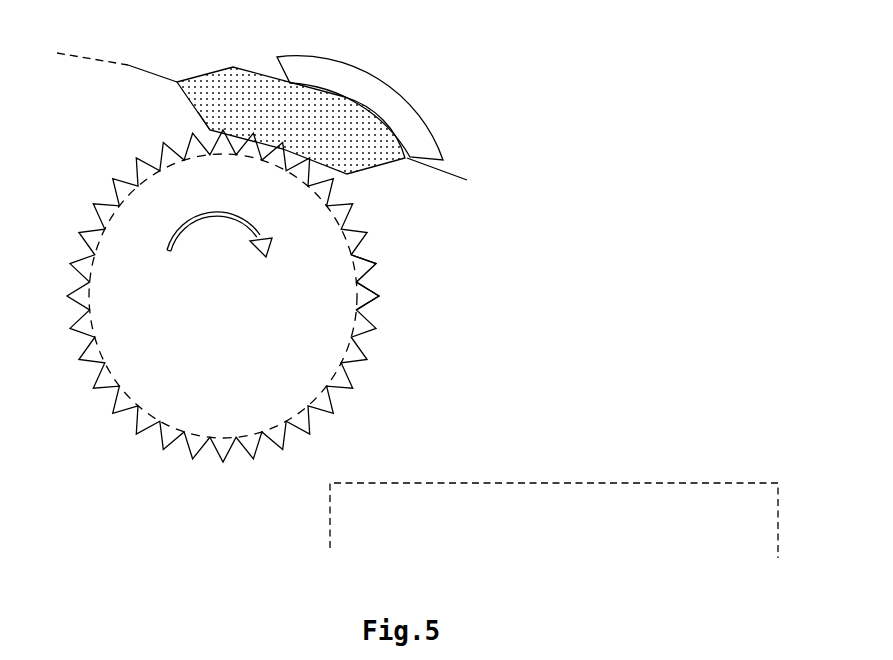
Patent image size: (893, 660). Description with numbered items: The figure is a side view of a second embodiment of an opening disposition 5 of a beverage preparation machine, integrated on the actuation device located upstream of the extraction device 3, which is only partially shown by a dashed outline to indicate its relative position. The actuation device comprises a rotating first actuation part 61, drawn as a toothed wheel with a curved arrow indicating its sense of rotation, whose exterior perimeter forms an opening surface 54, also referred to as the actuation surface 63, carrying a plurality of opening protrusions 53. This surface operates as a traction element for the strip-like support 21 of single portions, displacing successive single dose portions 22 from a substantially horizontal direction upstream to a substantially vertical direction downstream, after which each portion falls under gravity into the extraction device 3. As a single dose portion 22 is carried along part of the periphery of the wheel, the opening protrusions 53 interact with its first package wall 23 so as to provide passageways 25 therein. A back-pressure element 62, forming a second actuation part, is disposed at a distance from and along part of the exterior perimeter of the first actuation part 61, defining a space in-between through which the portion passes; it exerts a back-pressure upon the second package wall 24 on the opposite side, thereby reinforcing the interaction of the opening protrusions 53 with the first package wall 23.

The extraction device 3 is at (553, 509).
The opening disposition 5 is at (206, 296).
The strip-like support of single portions 21 is at (92, 52).
The single dose portion 22 is at (152, 67).
The first package wall 23 is at (188, 123).
The second package wall 24 is at (291, 116).
The passageway 25 is at (283, 149).
The opening protrusion 53 is at (381, 295).
The opening surface 54 is at (392, 257).
The first actuation part 61 is at (206, 296).
The back-pressure element 62 is at (372, 118).
The actuation surface 63 is at (410, 253).